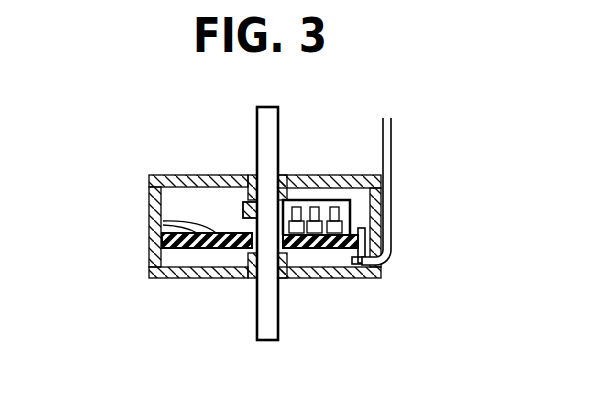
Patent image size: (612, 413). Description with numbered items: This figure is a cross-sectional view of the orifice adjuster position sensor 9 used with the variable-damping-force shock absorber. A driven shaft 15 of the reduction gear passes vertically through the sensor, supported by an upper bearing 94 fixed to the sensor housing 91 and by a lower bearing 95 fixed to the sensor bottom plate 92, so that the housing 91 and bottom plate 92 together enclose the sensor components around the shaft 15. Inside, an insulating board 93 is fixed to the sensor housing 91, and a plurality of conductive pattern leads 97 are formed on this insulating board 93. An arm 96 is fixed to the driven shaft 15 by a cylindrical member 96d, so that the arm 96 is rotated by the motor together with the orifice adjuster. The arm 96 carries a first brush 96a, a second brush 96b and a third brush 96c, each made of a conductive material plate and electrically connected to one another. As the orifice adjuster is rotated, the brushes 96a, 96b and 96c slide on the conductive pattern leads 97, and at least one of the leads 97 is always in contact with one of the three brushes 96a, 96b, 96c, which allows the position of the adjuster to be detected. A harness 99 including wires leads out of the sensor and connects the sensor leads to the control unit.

The orifice adjuster position sensor 9 is at (138, 191).
The driven shaft 15 is at (284, 117).
The sensor housing 91 is at (193, 175).
The sensor bottom plate 92 is at (185, 278).
The insulating board 93 is at (163, 238).
The upper bearing 94 is at (250, 178).
The lower bearing 95 is at (249, 276).
The arm 96 is at (313, 203).
The first brush 96a is at (292, 246).
The second brush 96b is at (345, 212).
The third brush 96c is at (343, 226).
The cylindrical member 96d is at (243, 210).
The conductive pattern leads 97 is at (163, 222).
The harness 99 is at (393, 148).